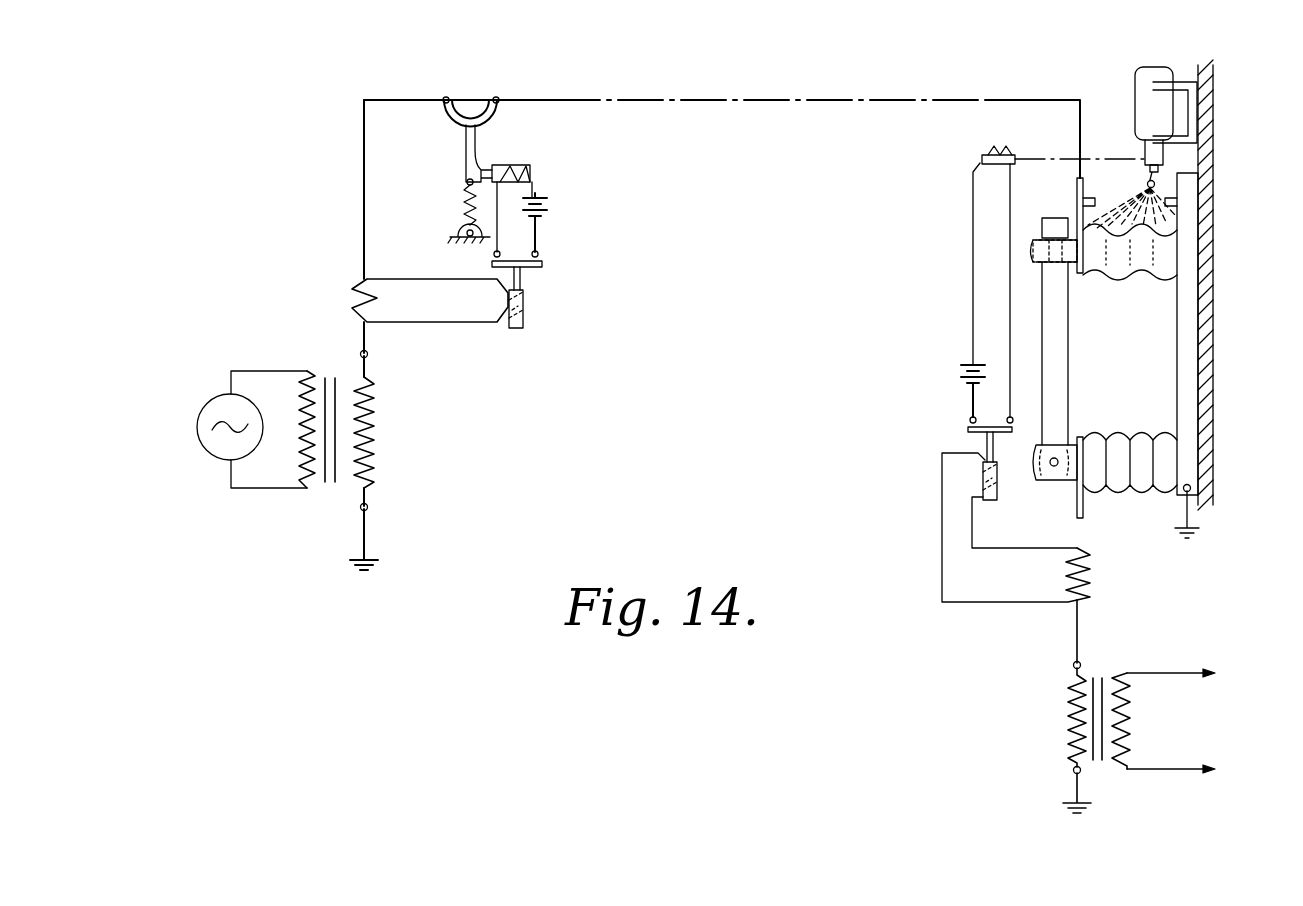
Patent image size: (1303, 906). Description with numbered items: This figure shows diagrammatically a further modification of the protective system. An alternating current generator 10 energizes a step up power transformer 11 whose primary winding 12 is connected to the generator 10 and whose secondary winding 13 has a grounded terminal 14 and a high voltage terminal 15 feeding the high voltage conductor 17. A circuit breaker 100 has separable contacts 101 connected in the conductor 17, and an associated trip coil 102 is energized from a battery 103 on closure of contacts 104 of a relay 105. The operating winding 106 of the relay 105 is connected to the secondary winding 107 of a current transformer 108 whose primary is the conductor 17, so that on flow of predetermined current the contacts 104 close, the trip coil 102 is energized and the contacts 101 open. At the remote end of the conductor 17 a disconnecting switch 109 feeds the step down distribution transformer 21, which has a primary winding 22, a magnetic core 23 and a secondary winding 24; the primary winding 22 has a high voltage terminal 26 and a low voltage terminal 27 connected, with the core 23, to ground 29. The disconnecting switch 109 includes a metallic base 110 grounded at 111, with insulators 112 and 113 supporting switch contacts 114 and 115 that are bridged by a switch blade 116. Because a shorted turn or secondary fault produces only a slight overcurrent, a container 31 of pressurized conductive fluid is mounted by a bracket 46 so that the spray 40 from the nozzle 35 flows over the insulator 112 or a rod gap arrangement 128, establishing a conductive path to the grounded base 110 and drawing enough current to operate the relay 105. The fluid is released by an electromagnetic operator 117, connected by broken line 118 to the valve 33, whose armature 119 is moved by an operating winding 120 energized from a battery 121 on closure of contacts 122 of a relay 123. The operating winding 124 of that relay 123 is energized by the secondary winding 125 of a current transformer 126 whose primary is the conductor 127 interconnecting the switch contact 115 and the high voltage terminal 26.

The alternating current generator 10 is at (205, 448).
The step up power transformer 11 is at (241, 398).
The primary winding 12 is at (300, 455).
The secondary winding 13 is at (372, 425).
The grounded terminal 14 is at (368, 507).
The high voltage terminal 15 is at (368, 354).
The high voltage conductor 17 is at (548, 100).
The step down power distribution transformer 21 is at (1147, 655).
The primary winding 22 is at (1070, 717).
The magnetic core 23 is at (1097, 765).
The secondary winding 24 is at (1125, 735).
The high voltage terminal 26 is at (1073, 665).
The low voltage terminal 27 is at (1073, 770).
The ground 29 is at (1085, 808).
The container 31 is at (1135, 95).
The valve 33 is at (1165, 163).
The nozzle 35 is at (1158, 186).
The spray of conductive fluid 40 is at (1206, 213).
The bracket 46 is at (1180, 85).
The circuit breaker 100 is at (522, 74).
The separable contacts 101 is at (470, 95).
The trip coil 102 is at (532, 165).
The battery 103 is at (548, 212).
The contacts 104 is at (515, 260).
The relay 105 is at (570, 301).
The operating winding 106 is at (527, 305).
The secondary winding 107 is at (378, 298).
The current transformer 108 is at (399, 277).
The disconnecting switch 109 is at (1026, 87).
The metallic base 110 is at (1177, 345).
The ground 111 is at (1200, 530).
The insulator 112 is at (1130, 280).
The insulator 113 is at (1125, 490).
The switch contact 114 is at (1054, 240).
The switch contact 115 is at (1042, 482).
The switch blade 116 is at (1060, 385).
The electromagnetic operator 117 is at (946, 146).
The broken line connection 118 is at (1045, 158).
The armature 119 is at (1000, 154).
The operating winding 120 is at (991, 168).
The battery 121 is at (963, 378).
The contacts 122 is at (985, 420).
The relay 123 is at (967, 517).
The operating winding 124 is at (985, 475).
The secondary winding 125 is at (1068, 573).
The current transformer 126 is at (1110, 576).
The conductor 127 is at (1080, 626).
The rod gap arrangement 128 is at (1118, 202).